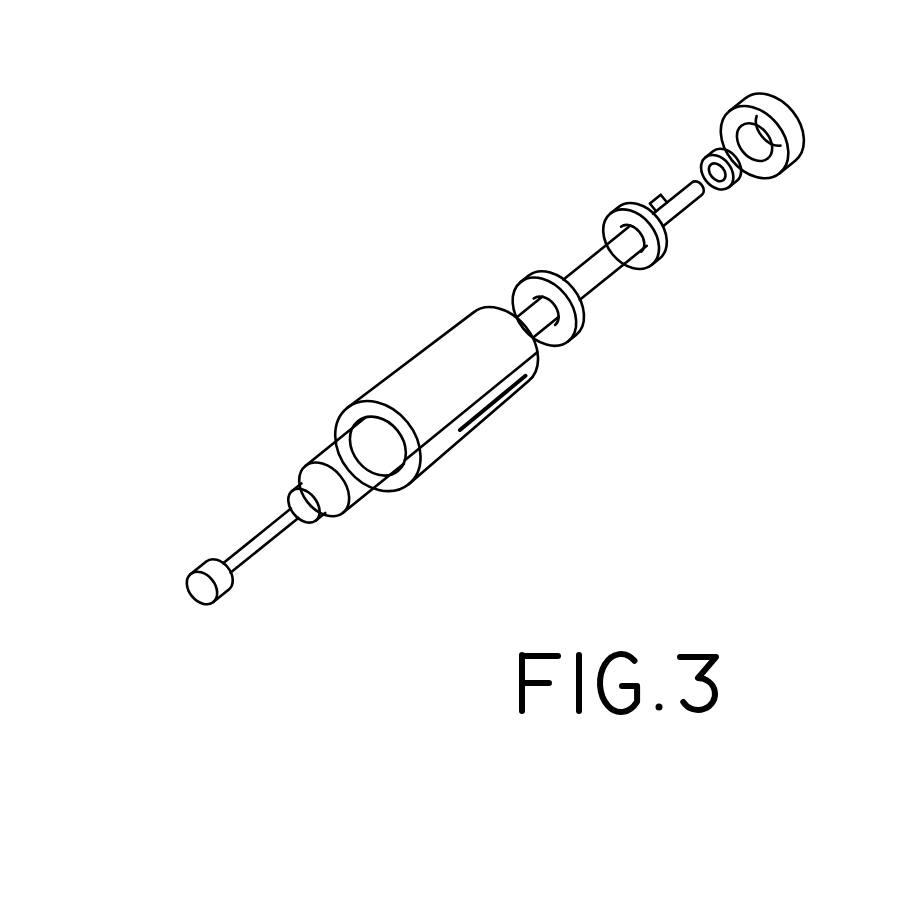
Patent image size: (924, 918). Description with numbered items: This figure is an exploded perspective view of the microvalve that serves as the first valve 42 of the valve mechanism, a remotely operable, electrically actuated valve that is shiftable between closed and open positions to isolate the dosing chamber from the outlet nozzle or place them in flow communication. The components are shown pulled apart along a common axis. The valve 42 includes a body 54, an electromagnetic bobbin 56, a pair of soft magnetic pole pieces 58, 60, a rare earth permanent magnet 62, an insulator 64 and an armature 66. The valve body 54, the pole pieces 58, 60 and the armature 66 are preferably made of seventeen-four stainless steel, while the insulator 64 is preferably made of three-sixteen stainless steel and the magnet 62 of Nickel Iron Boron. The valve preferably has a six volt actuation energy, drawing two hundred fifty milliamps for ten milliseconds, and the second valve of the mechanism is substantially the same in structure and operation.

The first valve 42 is at (278, 287).
The body 54 is at (508, 405).
The electromagnetic bobbin 56 is at (600, 247).
The soft magnetic pole piece 58 is at (802, 138).
The soft magnetic pole piece 60 is at (688, 198).
The rare earth permanent magnet 62 is at (733, 183).
The insulator 64 is at (517, 313).
The armature 66 is at (265, 552).